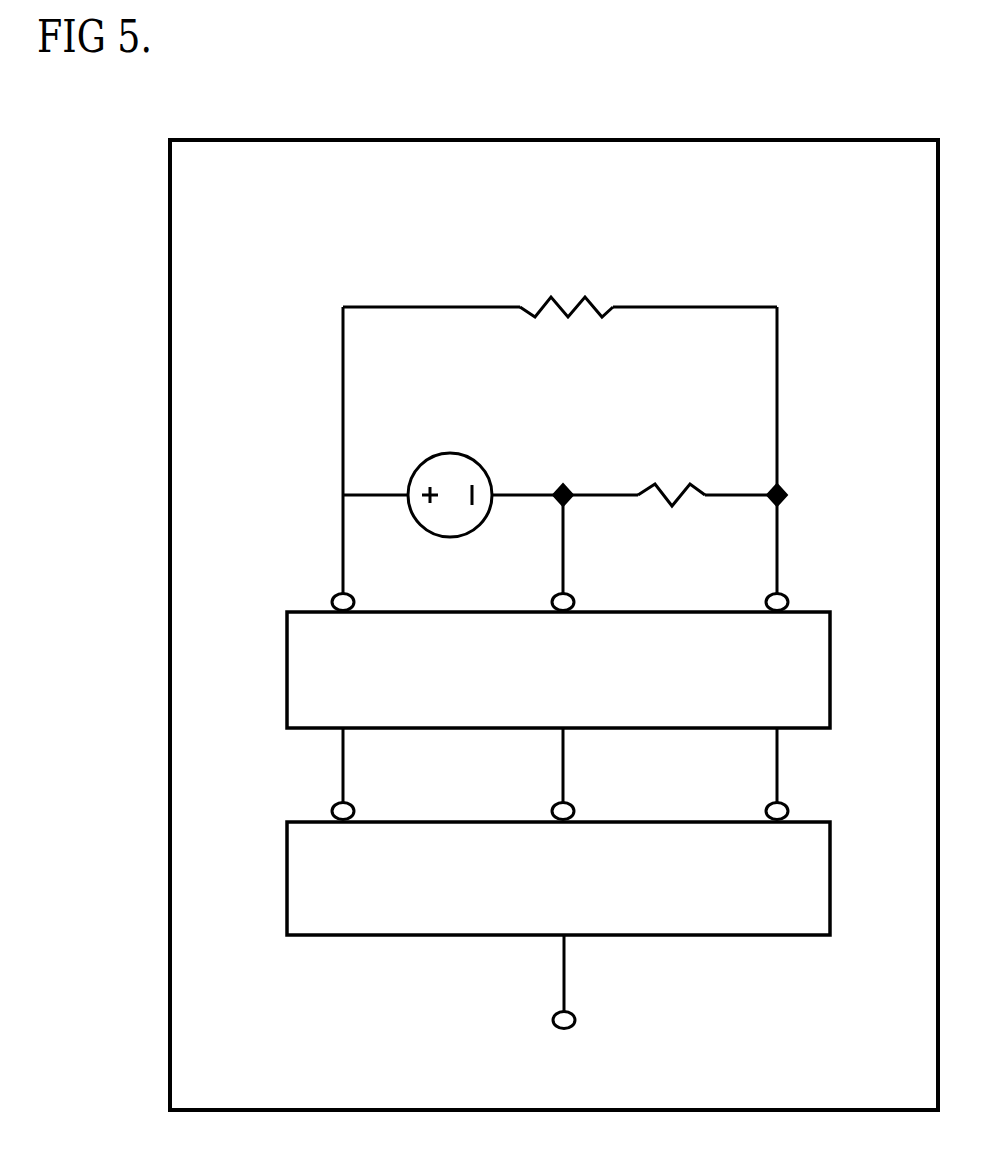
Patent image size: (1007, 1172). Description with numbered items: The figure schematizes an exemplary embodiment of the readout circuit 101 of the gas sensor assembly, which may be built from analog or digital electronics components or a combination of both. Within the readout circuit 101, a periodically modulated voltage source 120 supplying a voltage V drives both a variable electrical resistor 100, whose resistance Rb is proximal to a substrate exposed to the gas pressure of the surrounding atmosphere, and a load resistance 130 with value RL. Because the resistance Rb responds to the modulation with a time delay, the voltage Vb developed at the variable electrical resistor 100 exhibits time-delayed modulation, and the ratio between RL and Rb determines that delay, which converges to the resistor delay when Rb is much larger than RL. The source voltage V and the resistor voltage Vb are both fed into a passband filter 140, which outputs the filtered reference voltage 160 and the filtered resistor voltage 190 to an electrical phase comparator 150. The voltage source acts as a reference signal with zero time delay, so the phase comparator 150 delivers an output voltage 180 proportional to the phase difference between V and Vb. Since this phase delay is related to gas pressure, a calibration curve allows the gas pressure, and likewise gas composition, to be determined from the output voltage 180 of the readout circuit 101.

The readout electrical circuit 101 is at (168, 292).
The load resistance 130 is at (600, 287).
The periodically modulated voltage source 120 is at (435, 472).
The variable electrical resistor 100 is at (703, 490).
The passband filter 140 is at (307, 697).
The filtered reference voltage V' 160 is at (423, 782).
The filtered resistor voltage Vb' 190 is at (710, 778).
The phase comparator 150 is at (320, 918).
The output voltage Vs 180 is at (618, 1016).